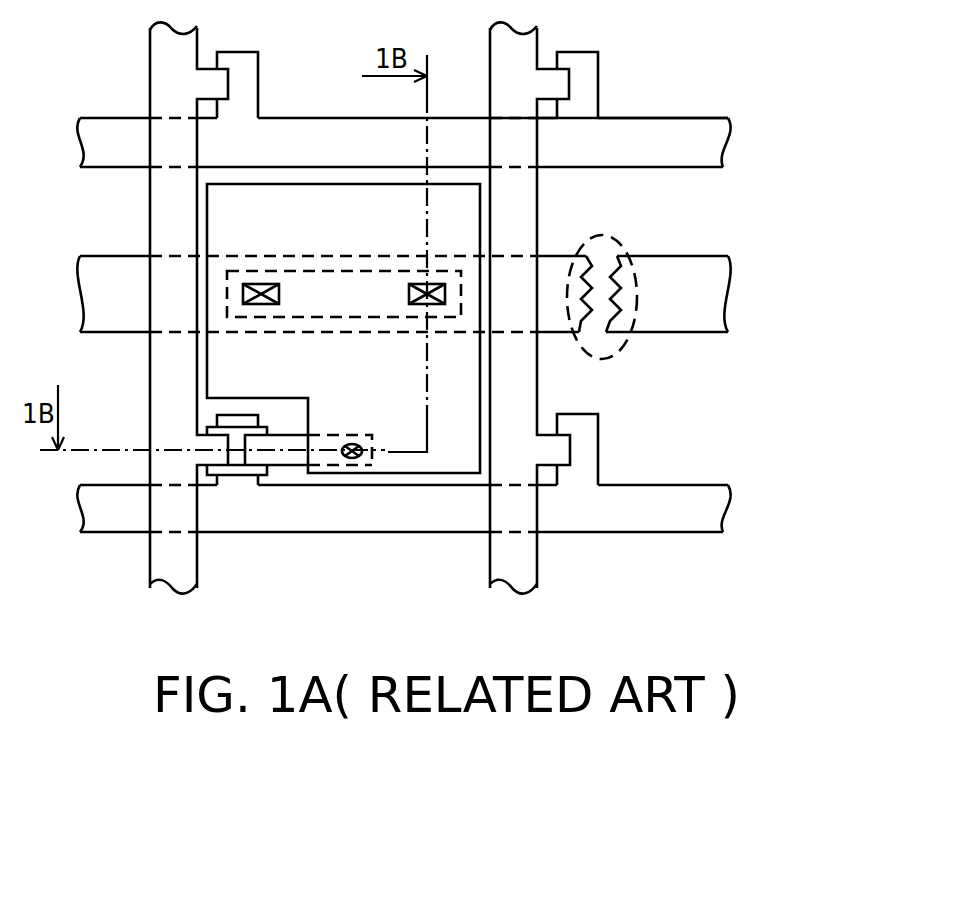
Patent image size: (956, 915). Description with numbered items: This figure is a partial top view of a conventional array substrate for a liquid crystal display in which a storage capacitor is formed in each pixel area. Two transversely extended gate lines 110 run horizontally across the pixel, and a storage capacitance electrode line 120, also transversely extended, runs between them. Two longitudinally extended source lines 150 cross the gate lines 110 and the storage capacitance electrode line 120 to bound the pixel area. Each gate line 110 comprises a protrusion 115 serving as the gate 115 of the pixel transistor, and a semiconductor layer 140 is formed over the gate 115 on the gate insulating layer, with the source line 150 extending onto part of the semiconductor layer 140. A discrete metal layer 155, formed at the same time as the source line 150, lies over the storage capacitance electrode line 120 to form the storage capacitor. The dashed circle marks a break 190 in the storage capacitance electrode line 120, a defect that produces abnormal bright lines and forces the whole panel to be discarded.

The gate line 110 is at (723, 144).
The storage capacitance electrode line 120 is at (724, 291).
The source line 150 is at (176, 591).
The discrete metal layer 155 is at (452, 270).
The break 190 is at (627, 353).
The gate 115 is at (222, 420).
The semiconductor layer 140 is at (238, 470).